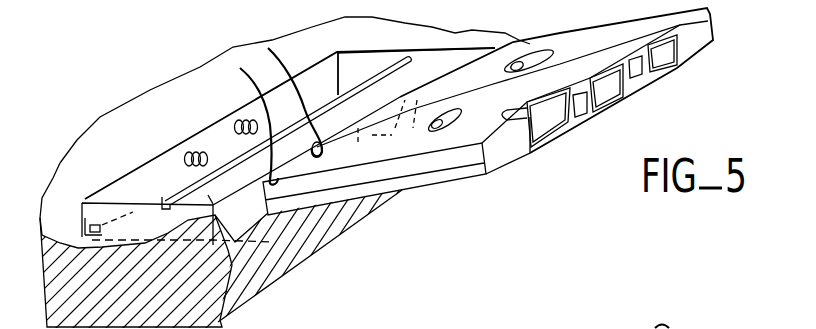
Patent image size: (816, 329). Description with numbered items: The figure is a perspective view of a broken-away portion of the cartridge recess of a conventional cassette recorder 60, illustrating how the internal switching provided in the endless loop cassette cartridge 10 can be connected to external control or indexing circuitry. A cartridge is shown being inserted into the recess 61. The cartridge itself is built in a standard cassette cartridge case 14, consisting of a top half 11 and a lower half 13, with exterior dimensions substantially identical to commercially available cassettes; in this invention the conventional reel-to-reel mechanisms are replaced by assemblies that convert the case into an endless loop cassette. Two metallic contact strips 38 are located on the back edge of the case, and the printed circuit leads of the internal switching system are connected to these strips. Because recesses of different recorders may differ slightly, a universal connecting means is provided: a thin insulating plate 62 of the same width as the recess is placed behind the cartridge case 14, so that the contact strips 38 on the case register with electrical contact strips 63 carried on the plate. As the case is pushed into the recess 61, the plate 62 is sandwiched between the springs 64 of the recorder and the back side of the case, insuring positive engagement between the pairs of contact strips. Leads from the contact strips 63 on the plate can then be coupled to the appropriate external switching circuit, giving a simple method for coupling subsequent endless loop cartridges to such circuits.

The endless loop cassette cartridge 10 is at (682, 107).
The top half 11 is at (560, 45).
The lower half 13 is at (493, 168).
The cartridge case 14 is at (608, 120).
The metallic contact strips 38 is at (390, 128).
The cassette recorder 60 is at (181, 123).
The recess 61 is at (421, 65).
The thin insulating plate 62 is at (367, 78).
The electrical contact strips 63 is at (366, 134).
The springs 64 is at (184, 153).